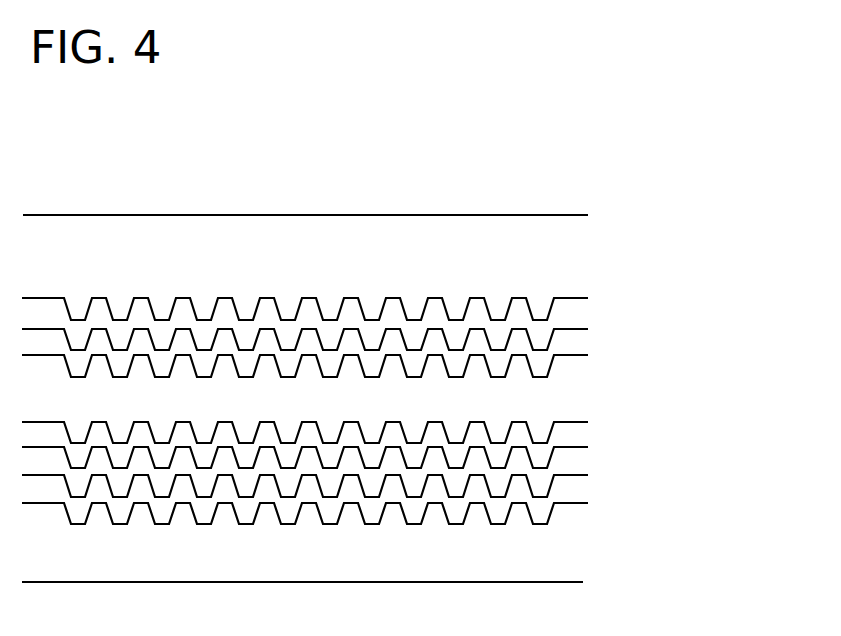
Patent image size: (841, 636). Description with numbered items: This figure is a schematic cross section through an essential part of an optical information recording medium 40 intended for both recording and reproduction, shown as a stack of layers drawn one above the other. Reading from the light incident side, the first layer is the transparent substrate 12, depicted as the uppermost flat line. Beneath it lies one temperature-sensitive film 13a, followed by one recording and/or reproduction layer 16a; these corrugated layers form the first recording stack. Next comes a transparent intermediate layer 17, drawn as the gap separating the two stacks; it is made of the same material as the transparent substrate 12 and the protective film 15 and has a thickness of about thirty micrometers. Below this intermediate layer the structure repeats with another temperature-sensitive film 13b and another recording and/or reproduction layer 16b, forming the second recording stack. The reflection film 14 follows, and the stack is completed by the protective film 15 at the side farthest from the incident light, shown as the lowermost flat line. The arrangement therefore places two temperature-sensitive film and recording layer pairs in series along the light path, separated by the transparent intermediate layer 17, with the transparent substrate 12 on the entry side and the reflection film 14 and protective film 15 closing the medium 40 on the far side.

The optical information recording medium 40 is at (486, 161).
The transparent substrate 12 is at (581, 257).
The temperature-sensitive film 13a is at (578, 317).
The recording and/or reproduction layer 16a is at (578, 352).
The transparent intermediate layer 17 is at (581, 394).
The temperature-sensitive film 13b is at (581, 432).
The recording and/or reproduction layer 16b is at (578, 469).
The reflection film 14 is at (578, 497).
The protective film 15 is at (578, 553).